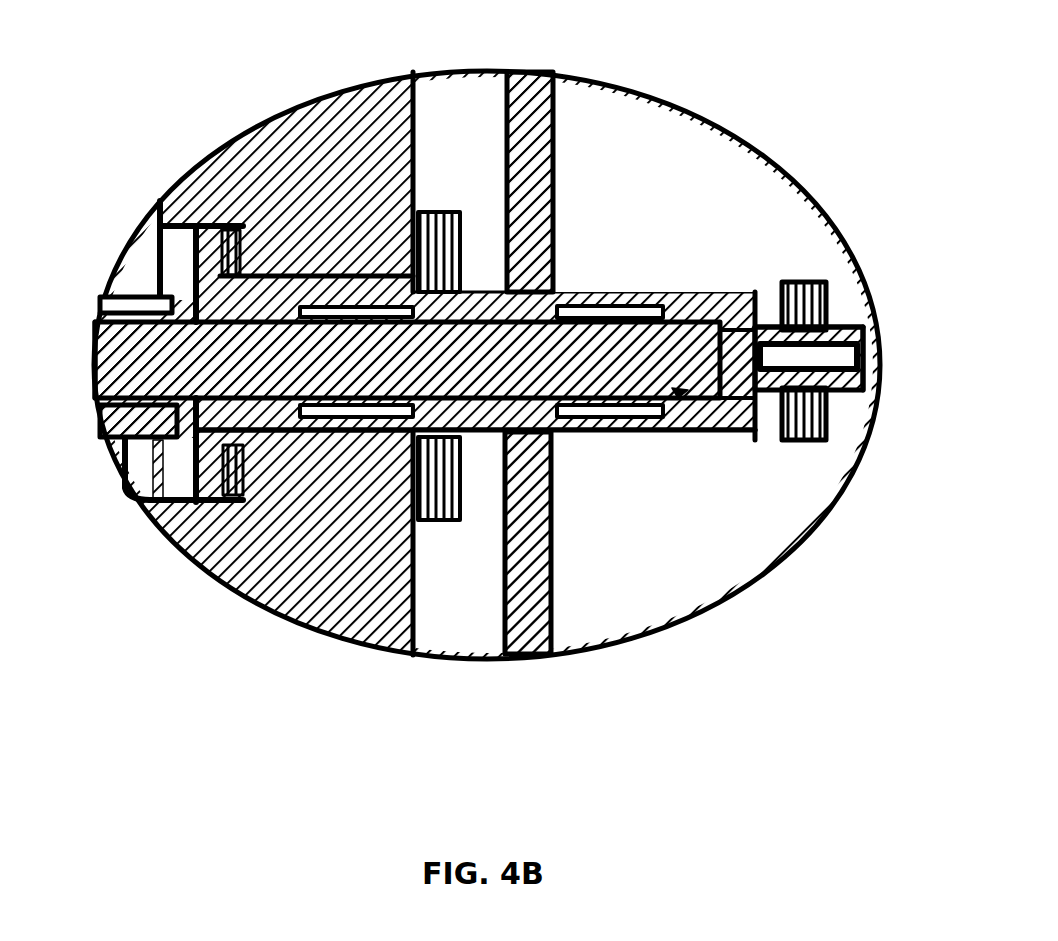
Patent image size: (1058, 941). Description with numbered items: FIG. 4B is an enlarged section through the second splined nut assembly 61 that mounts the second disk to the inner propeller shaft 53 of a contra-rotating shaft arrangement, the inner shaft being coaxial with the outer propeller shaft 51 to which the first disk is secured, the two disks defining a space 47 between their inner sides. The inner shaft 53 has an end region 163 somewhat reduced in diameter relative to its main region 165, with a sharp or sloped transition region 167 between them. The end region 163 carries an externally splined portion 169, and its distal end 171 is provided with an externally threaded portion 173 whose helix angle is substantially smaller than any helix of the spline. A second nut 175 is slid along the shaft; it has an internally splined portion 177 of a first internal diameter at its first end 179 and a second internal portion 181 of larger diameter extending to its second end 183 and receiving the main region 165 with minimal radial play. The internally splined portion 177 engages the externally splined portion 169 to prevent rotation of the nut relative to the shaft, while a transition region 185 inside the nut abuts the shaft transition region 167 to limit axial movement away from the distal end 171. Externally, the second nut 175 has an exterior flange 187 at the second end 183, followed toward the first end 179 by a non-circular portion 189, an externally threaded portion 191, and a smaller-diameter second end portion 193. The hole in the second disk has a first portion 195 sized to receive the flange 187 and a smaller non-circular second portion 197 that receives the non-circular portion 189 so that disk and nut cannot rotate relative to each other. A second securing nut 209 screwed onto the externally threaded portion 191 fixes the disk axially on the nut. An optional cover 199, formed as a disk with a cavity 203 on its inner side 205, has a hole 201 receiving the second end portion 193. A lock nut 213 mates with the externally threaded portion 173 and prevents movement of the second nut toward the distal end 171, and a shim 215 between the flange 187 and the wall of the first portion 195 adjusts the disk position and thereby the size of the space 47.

The space 47 is at (140, 253).
The outer propeller shaft 51 is at (112, 438).
The inner propeller shaft 53 is at (92, 386).
The second splined nut assembly 61 is at (623, 258).
The end region 163 is at (843, 314).
The main region 165 is at (627, 432).
The transition region 167 is at (757, 440).
The externally splined portion 169 is at (754, 328).
The distal end 171 is at (862, 352).
The externally threaded portion 173 is at (865, 327).
The second nut 175 is at (578, 290).
The internally splined portion 177 is at (745, 325).
The first end 179 is at (812, 282).
The second internal portion 181 is at (515, 398).
The second end 183 is at (160, 300).
The transition region 185 is at (678, 400).
The exterior flange 187 is at (183, 237).
The non-circular portion 189 is at (340, 292).
The externally threaded portion 191 is at (455, 447).
The second end portion 193 is at (637, 292).
The first portion 195 is at (140, 255).
The second portion 197 is at (312, 300).
The cover 199 is at (532, 70).
The hole 201 is at (505, 290).
The cavity 203 is at (470, 617).
The inner side 205 is at (500, 630).
The second securing nut 209 is at (440, 590).
The lock nut 213 is at (830, 414).
The shim 215 is at (240, 502).